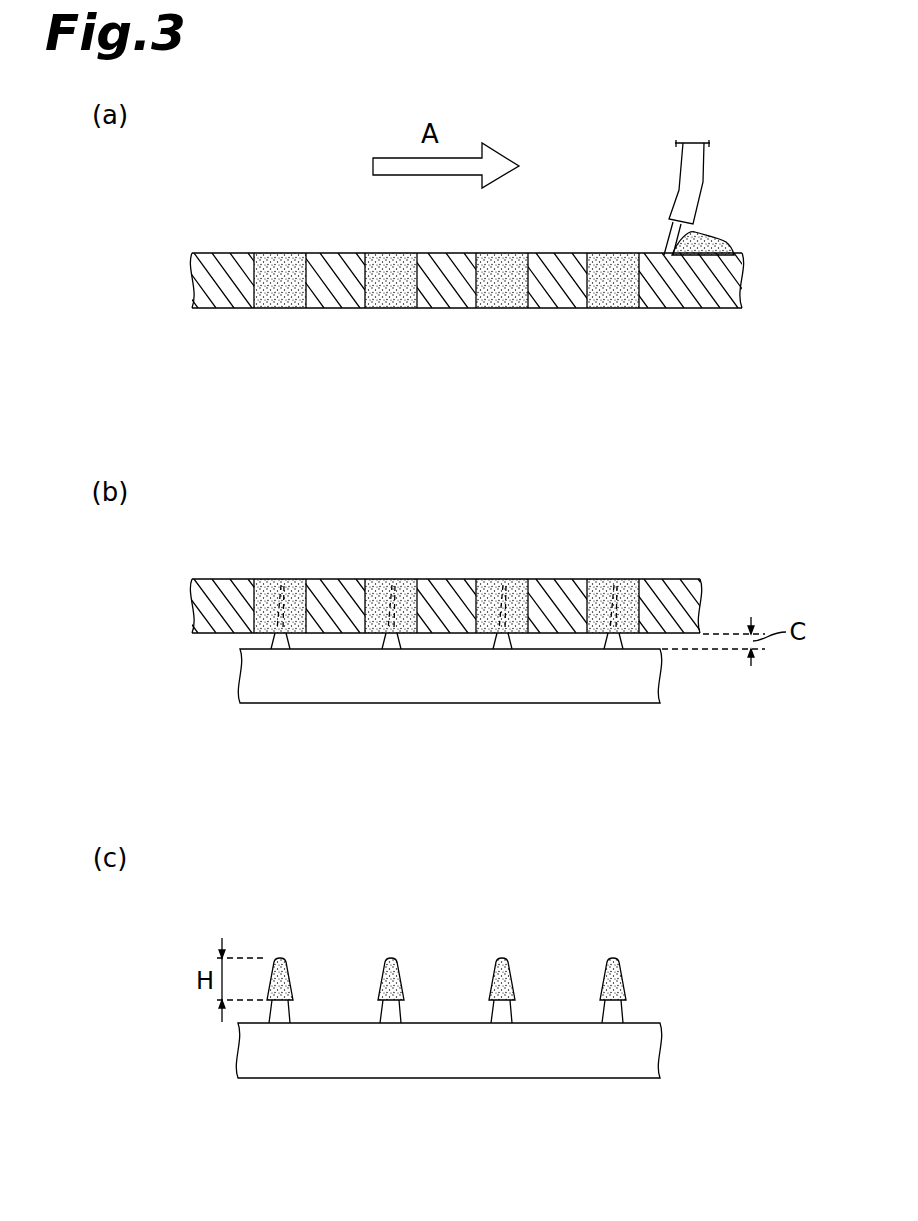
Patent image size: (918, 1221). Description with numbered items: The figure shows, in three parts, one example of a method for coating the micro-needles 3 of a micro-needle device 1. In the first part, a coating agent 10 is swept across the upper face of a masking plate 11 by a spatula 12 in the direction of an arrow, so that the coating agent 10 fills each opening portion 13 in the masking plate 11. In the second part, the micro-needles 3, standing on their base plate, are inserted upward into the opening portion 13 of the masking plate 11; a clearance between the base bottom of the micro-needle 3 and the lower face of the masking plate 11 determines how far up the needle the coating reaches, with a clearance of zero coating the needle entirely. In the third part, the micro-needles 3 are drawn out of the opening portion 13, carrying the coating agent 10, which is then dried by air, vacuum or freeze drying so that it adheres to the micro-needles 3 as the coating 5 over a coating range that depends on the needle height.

The laminated structure 1 is at (598, 725).
The micro-needles 3 is at (268, 638).
The coating 5 is at (607, 980).
The coating agent 10 is at (277, 288).
The masking plate 11 is at (228, 253).
The spatula 12 is at (668, 240).
The opening portion 13 is at (305, 272).